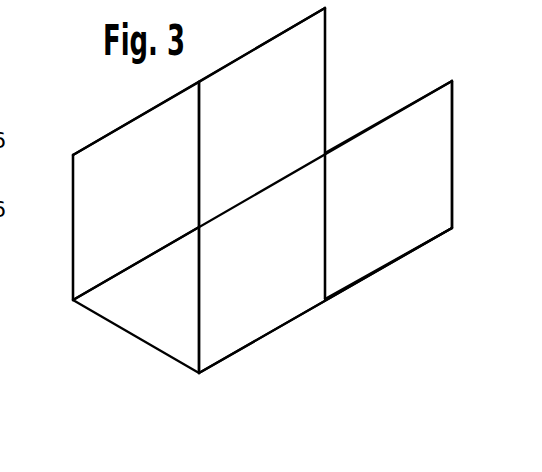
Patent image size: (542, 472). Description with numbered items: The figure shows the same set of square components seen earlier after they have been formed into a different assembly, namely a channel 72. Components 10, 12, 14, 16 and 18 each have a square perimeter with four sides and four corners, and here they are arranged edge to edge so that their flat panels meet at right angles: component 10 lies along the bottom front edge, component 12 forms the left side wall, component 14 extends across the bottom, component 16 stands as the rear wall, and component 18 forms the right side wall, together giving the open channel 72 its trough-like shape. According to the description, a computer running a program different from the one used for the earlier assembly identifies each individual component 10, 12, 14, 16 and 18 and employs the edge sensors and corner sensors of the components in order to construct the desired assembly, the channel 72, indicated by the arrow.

The component 10 is at (149, 318).
The component 12 is at (97, 200).
The component 14 is at (271, 314).
The component 16 is at (262, 74).
The component 18 is at (439, 193).
The channel 72 is at (467, 105).